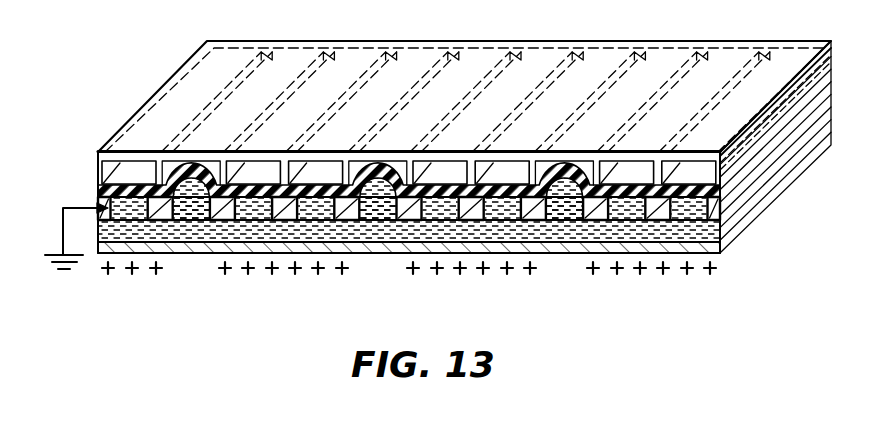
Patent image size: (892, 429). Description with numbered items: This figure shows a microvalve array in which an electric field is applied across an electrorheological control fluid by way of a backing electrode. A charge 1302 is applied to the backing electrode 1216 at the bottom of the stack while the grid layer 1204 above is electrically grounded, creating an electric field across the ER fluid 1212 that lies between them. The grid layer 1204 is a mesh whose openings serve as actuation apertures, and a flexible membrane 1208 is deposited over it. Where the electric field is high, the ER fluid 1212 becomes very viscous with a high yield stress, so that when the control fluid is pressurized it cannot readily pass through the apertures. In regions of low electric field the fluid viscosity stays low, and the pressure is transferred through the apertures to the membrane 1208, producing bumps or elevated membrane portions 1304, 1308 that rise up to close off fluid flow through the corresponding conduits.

The grid layer 1204 is at (722, 208).
The membrane 1208 is at (98, 190).
The electrorheological fluid 1212 is at (722, 226).
The backing electrode 1216 is at (722, 247).
The charge 1302 is at (727, 267).
The elevated membrane portion 1304 is at (207, 162).
The elevated membrane portion 1308 is at (540, 157).